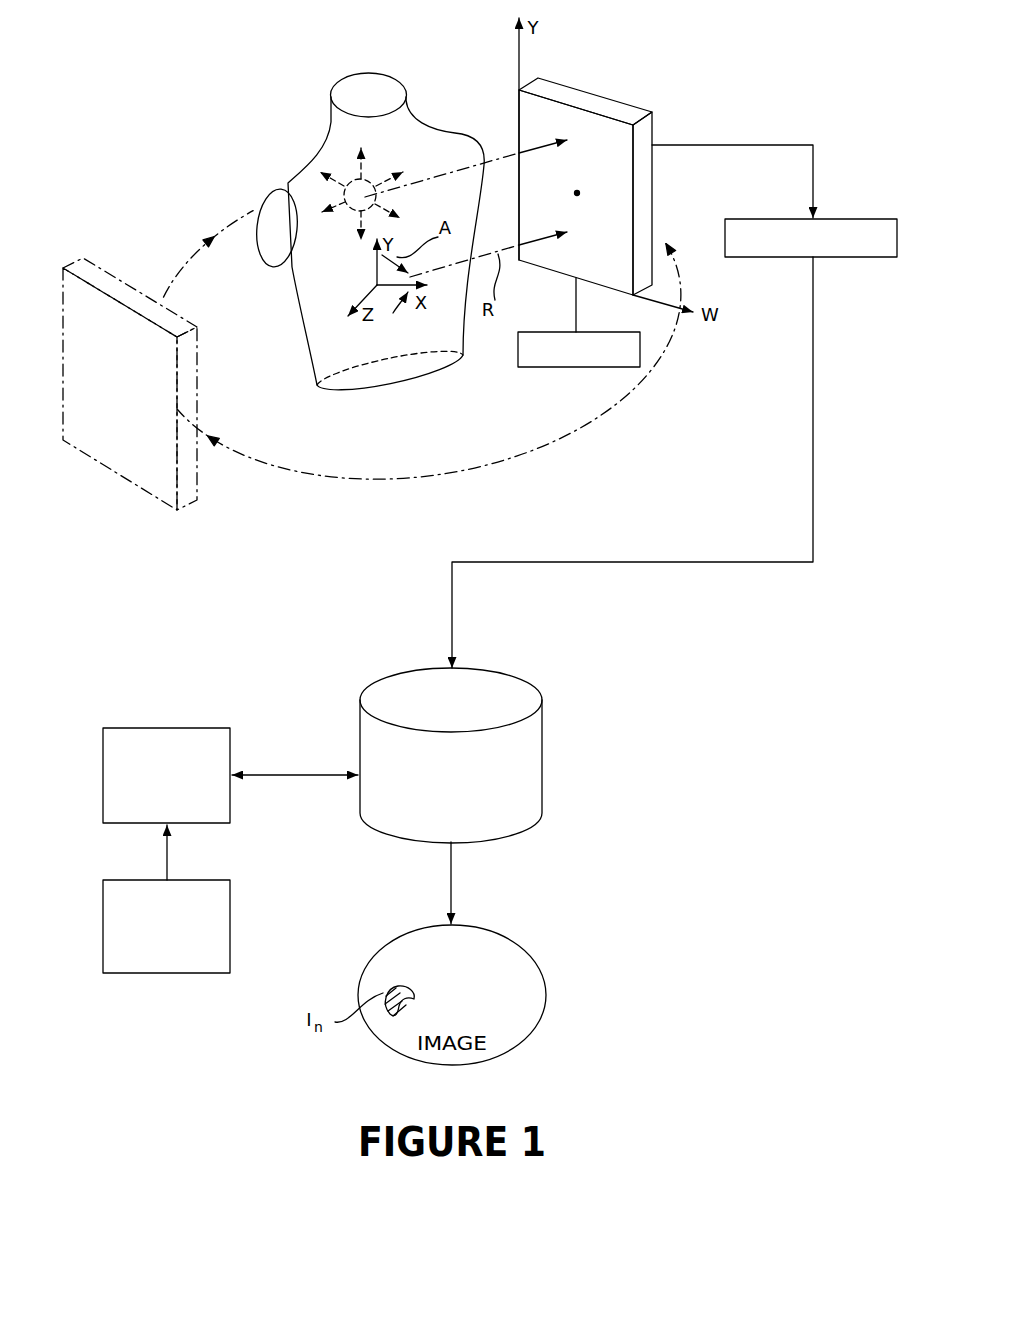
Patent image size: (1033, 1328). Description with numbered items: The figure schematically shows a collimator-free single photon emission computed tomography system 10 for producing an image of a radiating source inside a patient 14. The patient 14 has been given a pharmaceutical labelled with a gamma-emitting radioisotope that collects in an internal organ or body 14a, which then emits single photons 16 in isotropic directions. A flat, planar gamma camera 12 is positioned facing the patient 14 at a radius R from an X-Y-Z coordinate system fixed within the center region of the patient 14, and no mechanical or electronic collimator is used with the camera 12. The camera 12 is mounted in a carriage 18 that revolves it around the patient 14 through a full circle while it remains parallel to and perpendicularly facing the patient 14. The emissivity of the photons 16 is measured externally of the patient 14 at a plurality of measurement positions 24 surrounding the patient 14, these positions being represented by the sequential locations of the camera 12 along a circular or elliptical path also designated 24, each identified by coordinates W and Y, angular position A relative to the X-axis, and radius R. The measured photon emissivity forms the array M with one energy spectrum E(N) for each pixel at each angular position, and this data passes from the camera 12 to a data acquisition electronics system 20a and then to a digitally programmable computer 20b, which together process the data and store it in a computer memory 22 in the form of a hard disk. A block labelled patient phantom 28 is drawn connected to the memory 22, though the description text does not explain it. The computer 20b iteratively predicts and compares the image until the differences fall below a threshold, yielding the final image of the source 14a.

The collimator-free single photon emission computed tomography system 10 is at (303, 577).
The gamma camera 12 is at (603, 96).
The patient 14 is at (297, 173).
The internal organ or body 14a is at (377, 190).
The single photons 16 is at (324, 215).
The carriage 18 is at (518, 366).
The data acquisition electronics system 20a is at (851, 218).
The computer 20b is at (544, 775).
The computer memory 22 is at (231, 748).
The measurement positions 24 is at (577, 193).
The patient phantom 28 is at (231, 925).